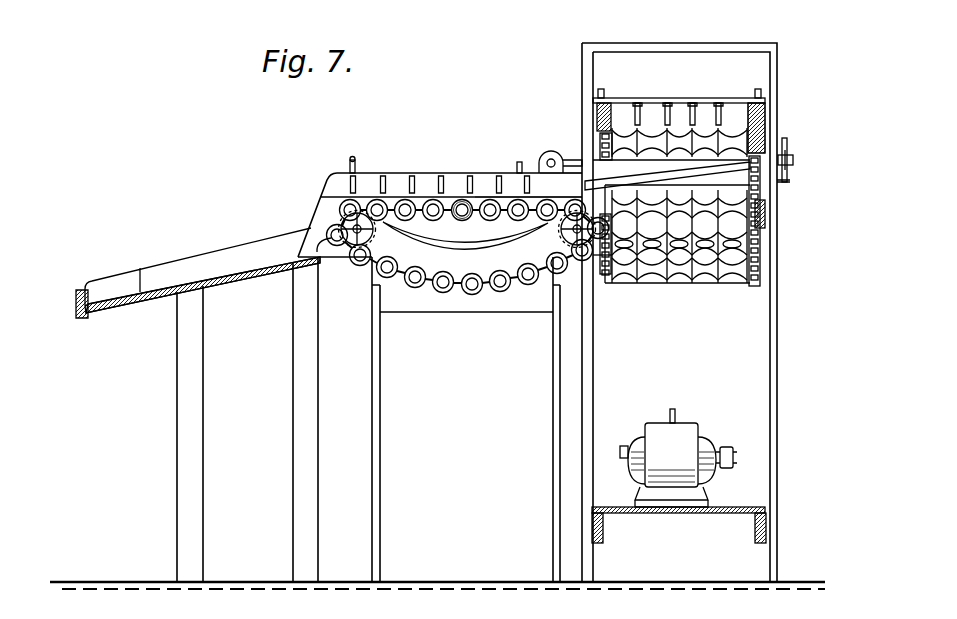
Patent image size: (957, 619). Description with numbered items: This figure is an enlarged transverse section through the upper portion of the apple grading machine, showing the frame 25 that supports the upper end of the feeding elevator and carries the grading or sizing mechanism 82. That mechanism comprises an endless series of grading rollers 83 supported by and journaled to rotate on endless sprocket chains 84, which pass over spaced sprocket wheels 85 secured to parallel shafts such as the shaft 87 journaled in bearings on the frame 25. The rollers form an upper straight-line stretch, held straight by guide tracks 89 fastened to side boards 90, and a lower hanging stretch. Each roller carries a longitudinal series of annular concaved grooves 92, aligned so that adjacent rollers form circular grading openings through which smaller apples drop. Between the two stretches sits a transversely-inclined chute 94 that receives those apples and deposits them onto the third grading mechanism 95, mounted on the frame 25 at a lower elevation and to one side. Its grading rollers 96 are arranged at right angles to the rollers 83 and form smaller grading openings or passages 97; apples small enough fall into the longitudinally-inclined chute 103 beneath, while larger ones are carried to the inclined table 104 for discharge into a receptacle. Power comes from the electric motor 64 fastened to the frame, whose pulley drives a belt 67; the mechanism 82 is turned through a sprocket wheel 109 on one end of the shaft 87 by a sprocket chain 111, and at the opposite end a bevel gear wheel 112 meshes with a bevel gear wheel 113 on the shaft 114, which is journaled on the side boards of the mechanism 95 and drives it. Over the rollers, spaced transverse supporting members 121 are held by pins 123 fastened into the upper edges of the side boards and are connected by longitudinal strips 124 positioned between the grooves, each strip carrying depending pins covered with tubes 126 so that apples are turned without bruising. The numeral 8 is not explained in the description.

The frame top bar 8 is at (451, 197).
The frame 25 is at (778, 274).
The electric motor 64 is at (679, 476).
The belt 67 is at (729, 446).
The grading or sizing mechanism 82 is at (748, 130).
The grading rollers 83 is at (766, 137).
The endless sprocket chains 84 is at (762, 247).
The sprocket wheels 85 is at (594, 152).
The shaft 87 is at (668, 160).
The guide tracks 89 is at (562, 150).
The side boards 90 is at (596, 105).
The annular concaved grooves 92 is at (650, 274).
The transversely-inclined chute 94 is at (645, 180).
The third grading mechanism 95 is at (474, 201).
The grading rollers 96 is at (424, 203).
The grading openings or passages 97 is at (388, 200).
The longitudinally-inclined chute 103 is at (490, 245).
The inclined table 104 is at (256, 277).
The sprocket wheel 109 is at (795, 162).
The sprocket chain 111 is at (788, 182).
The bevel gear wheel 112 is at (492, 136).
The bevel gear wheel 113 is at (522, 238).
The shaft 114 is at (562, 197).
The transverse supporting members 121 is at (352, 168).
The pins 123 is at (598, 93).
The longitudinal strips 124 is at (693, 104).
The tubes 126 is at (634, 112).